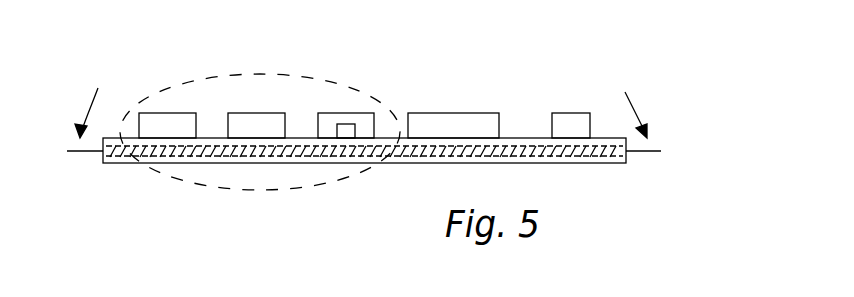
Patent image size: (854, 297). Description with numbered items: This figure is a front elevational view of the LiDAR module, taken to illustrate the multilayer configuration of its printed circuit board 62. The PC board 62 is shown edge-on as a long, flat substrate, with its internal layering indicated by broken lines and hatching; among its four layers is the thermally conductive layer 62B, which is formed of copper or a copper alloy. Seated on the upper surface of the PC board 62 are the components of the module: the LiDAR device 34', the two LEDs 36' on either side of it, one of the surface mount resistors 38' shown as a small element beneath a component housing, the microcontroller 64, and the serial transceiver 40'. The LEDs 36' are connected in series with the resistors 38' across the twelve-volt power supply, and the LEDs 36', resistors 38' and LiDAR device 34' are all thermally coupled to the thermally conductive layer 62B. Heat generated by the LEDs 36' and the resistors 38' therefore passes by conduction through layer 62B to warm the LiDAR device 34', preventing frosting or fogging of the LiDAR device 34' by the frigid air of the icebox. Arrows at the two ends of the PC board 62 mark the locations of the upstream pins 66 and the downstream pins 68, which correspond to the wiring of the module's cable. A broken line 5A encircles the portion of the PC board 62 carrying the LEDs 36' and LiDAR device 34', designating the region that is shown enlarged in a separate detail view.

The multilayer printed circuit board 62 is at (364, 185).
The thermally conductive layer 62B is at (308, 155).
The LED 36' is at (264, 84).
The LiDAR device 34' is at (272, 85).
The surface mount resistor 38' is at (358, 182).
The microcontroller 64 is at (467, 128).
The RS-485 transceiver 40' is at (573, 96).
The upstream pins 66 is at (623, 106).
The downstream pins 68 is at (94, 104).
The broken line 5A is at (196, 182).